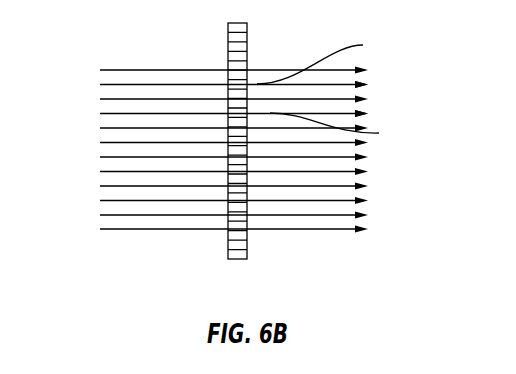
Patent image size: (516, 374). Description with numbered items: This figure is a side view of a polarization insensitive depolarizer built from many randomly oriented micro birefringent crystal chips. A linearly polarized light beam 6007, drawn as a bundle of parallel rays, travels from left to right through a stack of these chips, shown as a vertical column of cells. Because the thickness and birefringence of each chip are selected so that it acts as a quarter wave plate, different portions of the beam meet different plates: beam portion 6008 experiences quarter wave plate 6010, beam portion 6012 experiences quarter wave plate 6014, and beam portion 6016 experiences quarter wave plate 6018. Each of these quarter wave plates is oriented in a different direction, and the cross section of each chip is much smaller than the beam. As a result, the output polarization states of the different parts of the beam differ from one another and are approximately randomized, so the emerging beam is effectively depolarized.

The beam 6007 is at (92, 70).
The beam portion 6008 is at (135, 68).
The quarter wave plate 6010 is at (238, 73).
The quarter wave plate 6014 is at (337, 59).
The beam portion 6012 is at (366, 82).
The beam portion 6016 is at (366, 111).
The quarter wave plate 6018 is at (353, 130).